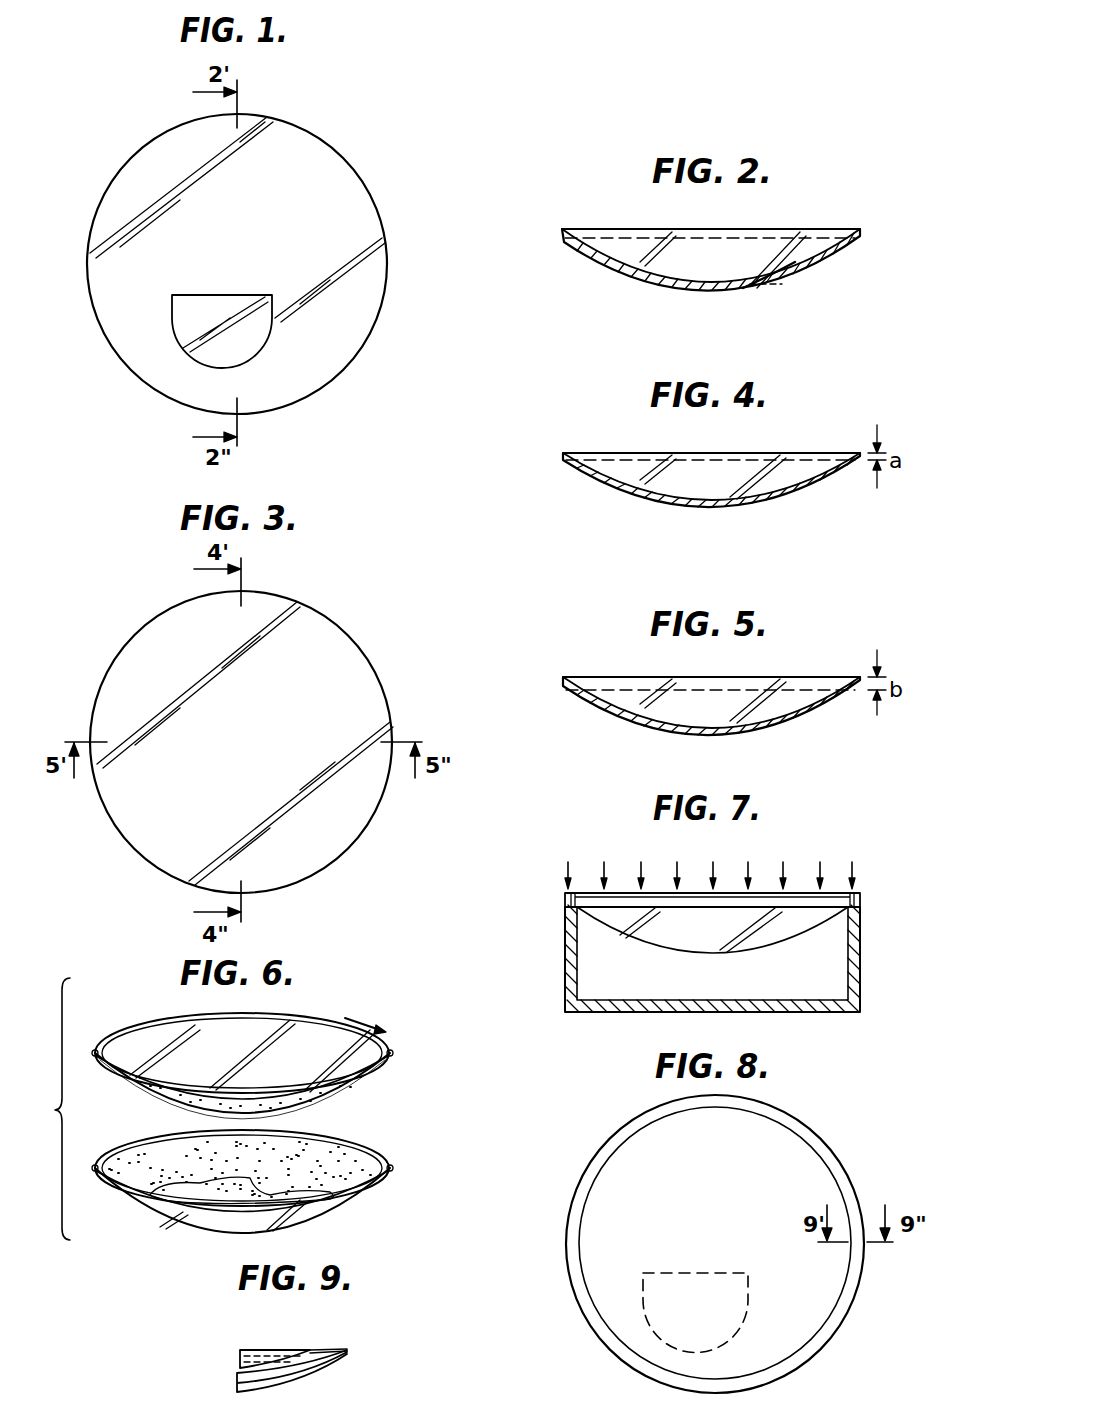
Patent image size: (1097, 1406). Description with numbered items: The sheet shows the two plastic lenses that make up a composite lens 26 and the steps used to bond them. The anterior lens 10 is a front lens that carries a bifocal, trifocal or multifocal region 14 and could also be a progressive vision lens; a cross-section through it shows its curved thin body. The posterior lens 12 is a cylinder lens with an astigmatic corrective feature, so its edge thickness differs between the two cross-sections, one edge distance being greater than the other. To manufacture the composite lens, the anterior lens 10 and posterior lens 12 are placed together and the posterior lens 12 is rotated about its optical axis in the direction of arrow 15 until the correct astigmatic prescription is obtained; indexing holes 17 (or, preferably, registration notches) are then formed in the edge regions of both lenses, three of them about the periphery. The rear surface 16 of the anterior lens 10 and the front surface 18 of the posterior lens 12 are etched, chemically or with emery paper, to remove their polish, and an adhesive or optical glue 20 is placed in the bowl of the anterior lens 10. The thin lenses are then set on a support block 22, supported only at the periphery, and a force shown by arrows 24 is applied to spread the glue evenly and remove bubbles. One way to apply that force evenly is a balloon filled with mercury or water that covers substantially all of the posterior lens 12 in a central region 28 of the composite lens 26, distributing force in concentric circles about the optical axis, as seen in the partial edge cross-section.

In FIG. 1, the anterior lens 10 is at (354, 178).
In FIG. 2, the anterior lens 10 is at (838, 262).
In FIG. 6, the anterior lens 10 is at (353, 1200).
In FIG. 9, the anterior lens 10 is at (308, 1370).
In FIG. 4, the posterior lens 12 is at (825, 492).
In FIG. 5, the posterior lens 12 is at (822, 720).
In FIG. 3, the posterior lens 12 is at (339, 622).
In FIG. 6, the posterior lens 12 is at (300, 1014).
In FIG. 9, the posterior lens 12 is at (303, 1342).
In FIG. 1, the bifocal, trifocal or multifocal region 14 is at (268, 347).
In FIG. 6, the arrow 15 is at (375, 1028).
In FIG. 6, the rear surface 16 is at (353, 1160).
In FIG. 6, the indexing holes 17 is at (97, 1043).
In FIG. 6, the front surface 18 is at (335, 1095).
In FIG. 6, the adhesive or optical glue 20 is at (170, 1193).
In FIG. 7, the block 22 is at (862, 960).
In FIG. 7, the arrows 24 is at (785, 866).
In FIG. 7, the composite lens 26 is at (560, 897).
In FIG. 8, the composite lens 26 is at (569, 1188).
In FIG. 9, the composite lens 26 is at (352, 1348).
In FIG. 8, the central region 28 is at (775, 1137).